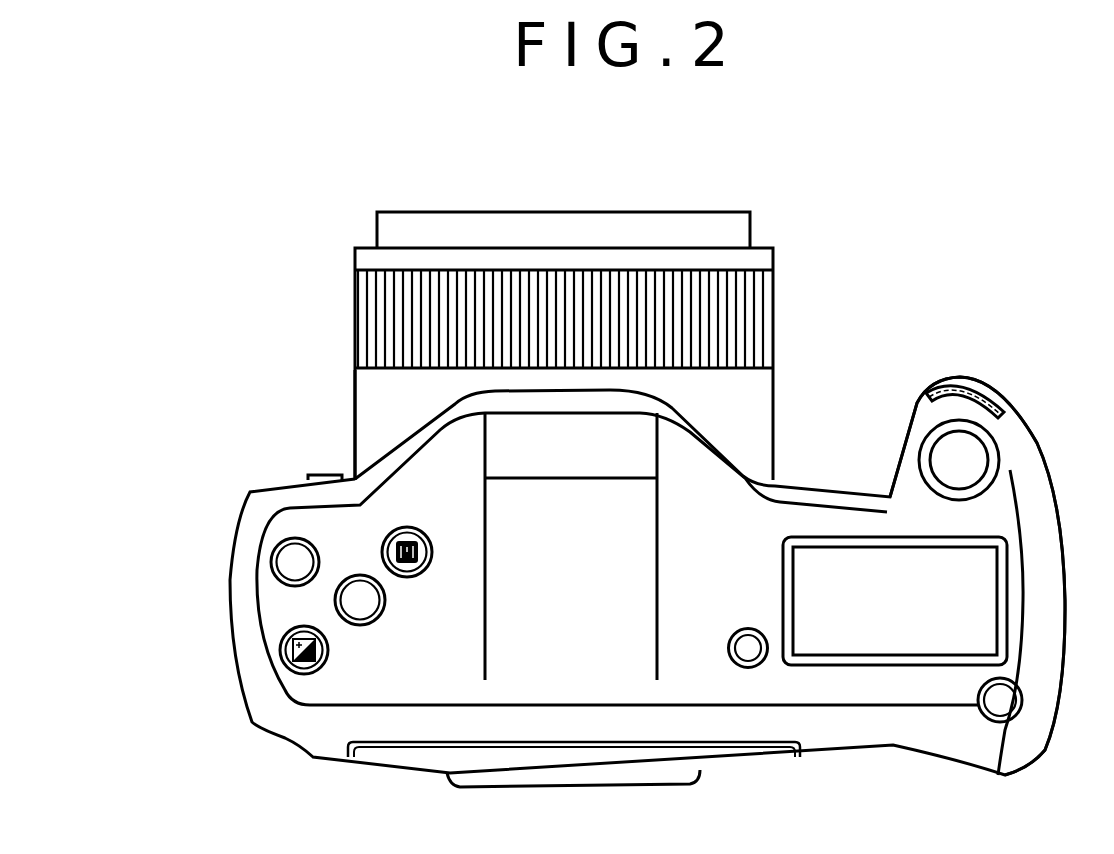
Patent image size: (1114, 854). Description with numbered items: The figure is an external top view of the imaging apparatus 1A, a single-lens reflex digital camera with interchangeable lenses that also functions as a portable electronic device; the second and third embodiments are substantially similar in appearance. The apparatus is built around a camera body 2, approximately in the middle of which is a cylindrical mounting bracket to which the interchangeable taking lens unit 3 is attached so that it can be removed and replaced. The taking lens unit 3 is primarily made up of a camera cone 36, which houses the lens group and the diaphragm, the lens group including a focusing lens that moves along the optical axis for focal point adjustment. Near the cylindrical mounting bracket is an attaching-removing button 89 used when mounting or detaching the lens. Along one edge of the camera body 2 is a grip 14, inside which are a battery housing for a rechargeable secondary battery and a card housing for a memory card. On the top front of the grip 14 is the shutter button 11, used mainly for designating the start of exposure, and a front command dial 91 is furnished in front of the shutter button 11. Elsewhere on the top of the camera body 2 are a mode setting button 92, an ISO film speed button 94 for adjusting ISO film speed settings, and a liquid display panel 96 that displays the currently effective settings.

The imaging apparatus 1A is at (317, 279).
The camera body 2 is at (270, 488).
The taking lens unit 3 is at (650, 211).
The camera cone 36 is at (355, 383).
The attaching-removing button 89 is at (328, 473).
The ISO film speed button 94 is at (336, 600).
The grip 14 is at (920, 430).
The front command dial 91 is at (973, 377).
The shutter button 11 is at (957, 458).
The display panel 96 is at (862, 628).
The mode setting button 92 is at (1000, 700).